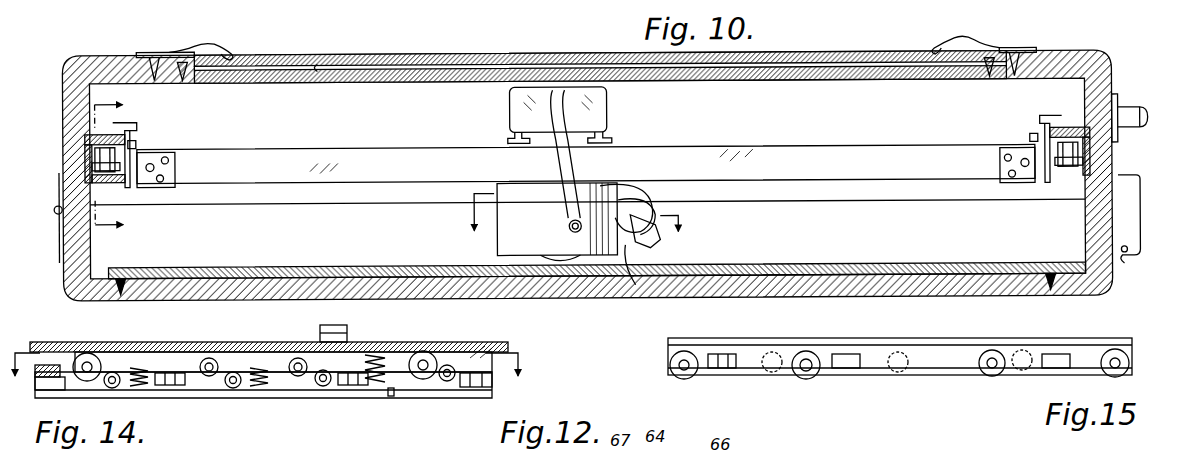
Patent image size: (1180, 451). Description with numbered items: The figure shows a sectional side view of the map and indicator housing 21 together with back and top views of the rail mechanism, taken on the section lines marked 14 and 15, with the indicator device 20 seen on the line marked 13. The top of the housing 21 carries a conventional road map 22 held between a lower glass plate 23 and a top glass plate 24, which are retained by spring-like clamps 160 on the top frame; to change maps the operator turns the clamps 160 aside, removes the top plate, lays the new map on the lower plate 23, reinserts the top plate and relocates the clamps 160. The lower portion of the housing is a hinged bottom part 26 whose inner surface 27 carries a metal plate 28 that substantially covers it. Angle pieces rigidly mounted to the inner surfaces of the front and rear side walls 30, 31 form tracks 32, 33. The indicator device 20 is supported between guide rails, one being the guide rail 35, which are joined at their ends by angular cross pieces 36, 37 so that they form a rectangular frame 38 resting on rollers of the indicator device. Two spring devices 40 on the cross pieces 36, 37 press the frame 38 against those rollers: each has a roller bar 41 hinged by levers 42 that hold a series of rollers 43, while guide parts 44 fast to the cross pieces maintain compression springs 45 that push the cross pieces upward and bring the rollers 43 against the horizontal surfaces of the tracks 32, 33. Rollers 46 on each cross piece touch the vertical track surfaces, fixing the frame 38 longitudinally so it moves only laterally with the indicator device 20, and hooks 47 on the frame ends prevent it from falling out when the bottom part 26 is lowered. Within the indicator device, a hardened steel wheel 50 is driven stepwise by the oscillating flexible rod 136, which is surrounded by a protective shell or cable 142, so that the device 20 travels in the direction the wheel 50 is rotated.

In FIG. 10, the section line / cable 13 is at (575, 235).
In FIG. 10, the section line 14 is at (121, 165).
In FIG. 14, the section line 15 is at (264, 376).
In FIG. 10, the indicator device 20 is at (618, 110).
In FIG. 10, the map and indicator housing 21 is at (845, 45).
In FIG. 10, the road map 22 is at (322, 66).
In FIG. 10, the lower glass plate 23 is at (350, 80).
In FIG. 10, the top glass plate 24 is at (400, 55).
In FIG. 10, the hinged bottom part 26 is at (965, 288).
In FIG. 10, the inner surface 27 is at (895, 266).
In FIG. 10, the metal plate 28 is at (830, 263).
In FIG. 10, the front side wall 30 is at (1108, 80).
In FIG. 10, the rear side wall 31 is at (72, 100).
In FIG. 10, the track 32 is at (1075, 125).
In FIG. 10, the track 33 is at (82, 136).
In FIG. 14, the track 33 is at (460, 341).
In FIG. 10, the guide rail 35 is at (836, 143).
In FIG. 10, the cross piece 36 is at (1050, 185).
In FIG. 10, the cross piece 37 is at (195, 205).
In FIG. 14, the cross piece 37 is at (320, 392).
In FIG. 10, the rectangular frame 38 is at (745, 146).
In FIG. 14, the spring device 40 is at (276, 402).
In FIG. 15, the spring device 40 is at (850, 385).
In FIG. 14, the roller bar 41 is at (258, 345).
In FIG. 15, the roller bar 41 is at (757, 375).
In FIG. 14, the lever 42 is at (233, 389).
In FIG. 15, the lever 42 is at (718, 352).
In FIG. 14, the roller 43 is at (205, 376).
In FIG. 15, the roller 43 is at (835, 352).
In FIG. 14, the guide part 44 is at (388, 396).
In FIG. 15, the guide part 44 is at (900, 372).
In FIG. 14, the compression spring 45 is at (400, 370).
In FIG. 10, the roller 46 is at (95, 164).
In FIG. 14, the roller 46 is at (476, 385).
In FIG. 15, the roller 46 is at (672, 365).
In FIG. 10, the hook 47 is at (137, 121).
In FIG. 14, the hook 47 is at (348, 332).
In FIG. 10, the hardened steel wheel 50 is at (560, 258).
In FIG. 10, the flexible rod 136 is at (566, 230).
In FIG. 10, the protective shell 142 is at (577, 168).
In FIG. 10, the spring-like clamp 160 is at (215, 48).